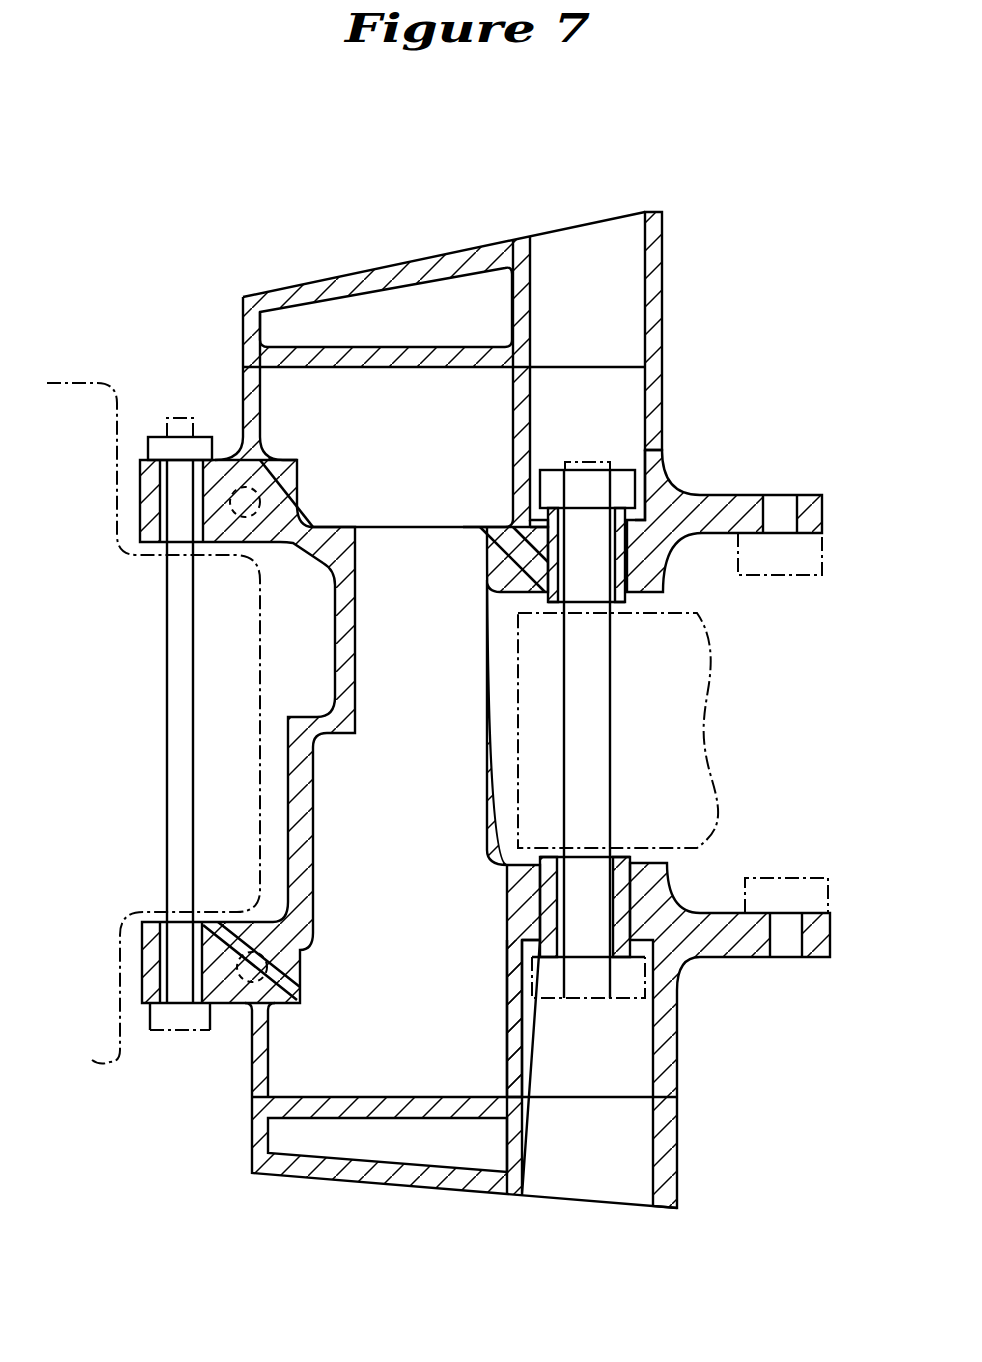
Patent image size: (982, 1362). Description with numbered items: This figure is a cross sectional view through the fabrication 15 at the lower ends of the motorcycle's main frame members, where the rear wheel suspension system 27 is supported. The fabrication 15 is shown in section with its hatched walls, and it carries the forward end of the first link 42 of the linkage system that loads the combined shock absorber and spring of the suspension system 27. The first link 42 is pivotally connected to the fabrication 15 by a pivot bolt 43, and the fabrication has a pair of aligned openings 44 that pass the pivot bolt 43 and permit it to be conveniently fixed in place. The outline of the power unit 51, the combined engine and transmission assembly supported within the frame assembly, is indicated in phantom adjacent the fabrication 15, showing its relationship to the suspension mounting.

The fabrication 15 is at (246, 1115).
The suspension system 27 is at (763, 423).
The first link 42 is at (713, 770).
The pivot bolt 43 is at (612, 724).
The aligned openings 44 is at (651, 280).
The power unit 51 is at (104, 375).